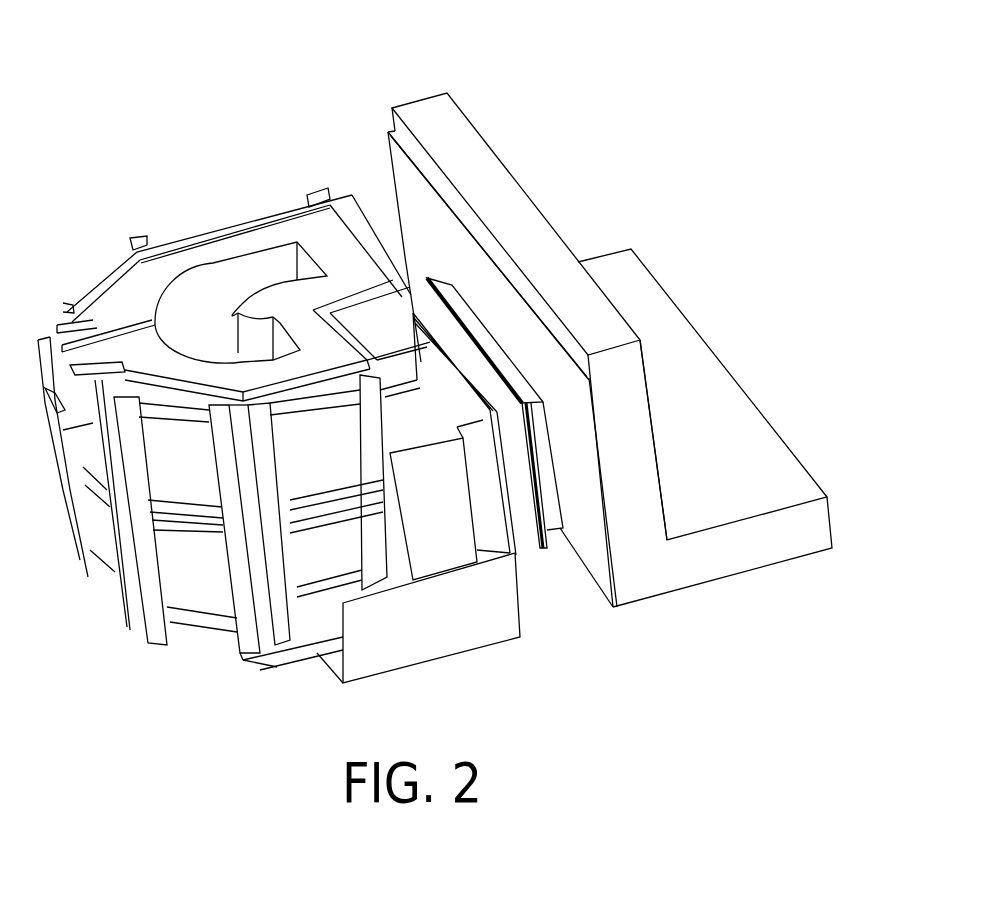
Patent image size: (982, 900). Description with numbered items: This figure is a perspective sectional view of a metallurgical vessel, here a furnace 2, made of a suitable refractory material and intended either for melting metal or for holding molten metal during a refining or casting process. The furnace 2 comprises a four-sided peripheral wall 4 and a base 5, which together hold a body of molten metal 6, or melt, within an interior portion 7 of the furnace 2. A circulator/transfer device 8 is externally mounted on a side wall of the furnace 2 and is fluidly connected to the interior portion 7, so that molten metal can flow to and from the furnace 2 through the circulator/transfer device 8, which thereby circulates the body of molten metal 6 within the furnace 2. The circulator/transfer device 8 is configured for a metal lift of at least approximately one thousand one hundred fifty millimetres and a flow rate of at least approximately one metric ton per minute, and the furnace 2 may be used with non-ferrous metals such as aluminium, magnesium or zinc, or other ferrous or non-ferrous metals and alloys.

The furnace 2 is at (668, 213).
The peripheral wall 4 is at (448, 92).
The base 5 is at (705, 469).
The body of molten metal 6 is at (659, 322).
The interior portion 7 is at (726, 405).
The circulator/transfer device 8 is at (120, 233).